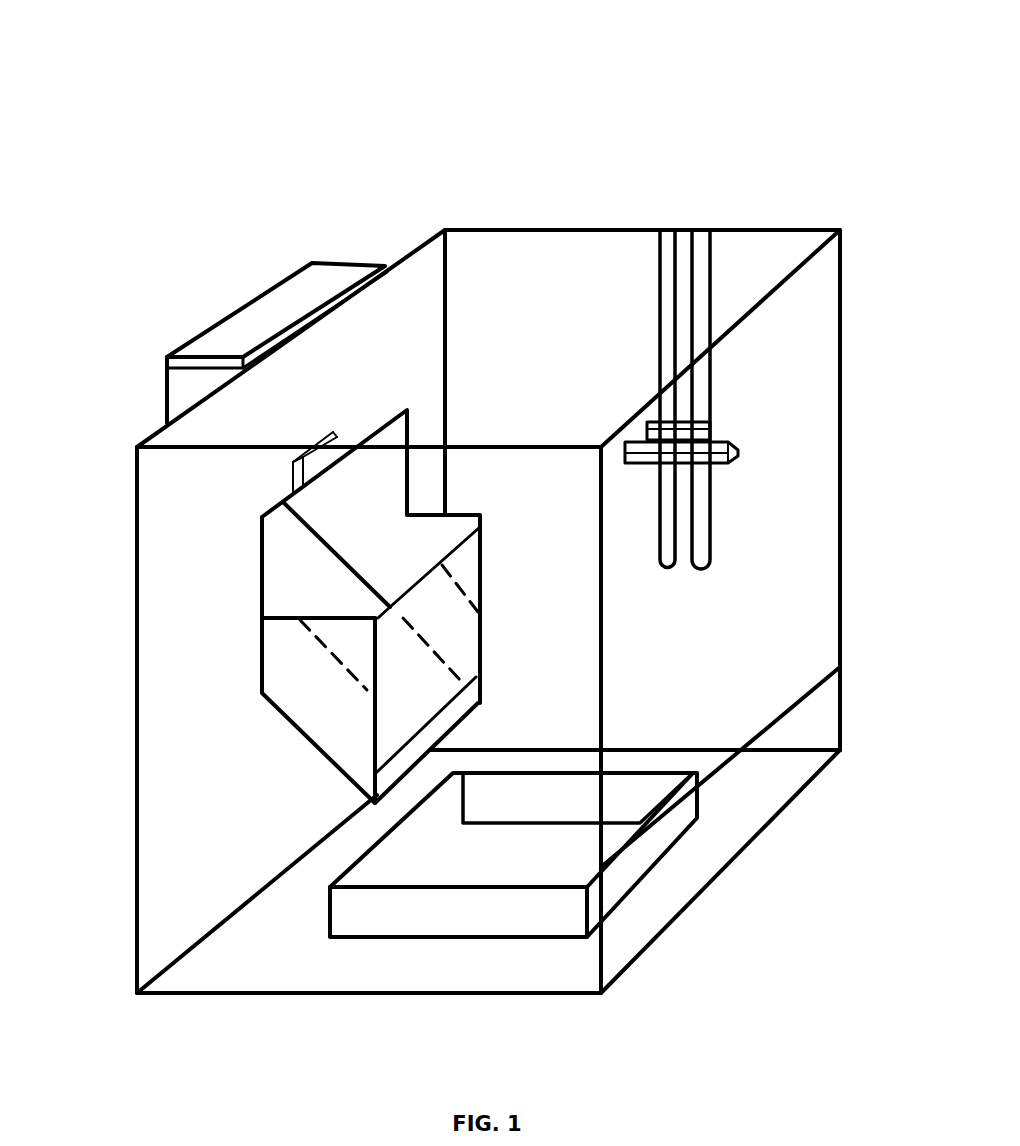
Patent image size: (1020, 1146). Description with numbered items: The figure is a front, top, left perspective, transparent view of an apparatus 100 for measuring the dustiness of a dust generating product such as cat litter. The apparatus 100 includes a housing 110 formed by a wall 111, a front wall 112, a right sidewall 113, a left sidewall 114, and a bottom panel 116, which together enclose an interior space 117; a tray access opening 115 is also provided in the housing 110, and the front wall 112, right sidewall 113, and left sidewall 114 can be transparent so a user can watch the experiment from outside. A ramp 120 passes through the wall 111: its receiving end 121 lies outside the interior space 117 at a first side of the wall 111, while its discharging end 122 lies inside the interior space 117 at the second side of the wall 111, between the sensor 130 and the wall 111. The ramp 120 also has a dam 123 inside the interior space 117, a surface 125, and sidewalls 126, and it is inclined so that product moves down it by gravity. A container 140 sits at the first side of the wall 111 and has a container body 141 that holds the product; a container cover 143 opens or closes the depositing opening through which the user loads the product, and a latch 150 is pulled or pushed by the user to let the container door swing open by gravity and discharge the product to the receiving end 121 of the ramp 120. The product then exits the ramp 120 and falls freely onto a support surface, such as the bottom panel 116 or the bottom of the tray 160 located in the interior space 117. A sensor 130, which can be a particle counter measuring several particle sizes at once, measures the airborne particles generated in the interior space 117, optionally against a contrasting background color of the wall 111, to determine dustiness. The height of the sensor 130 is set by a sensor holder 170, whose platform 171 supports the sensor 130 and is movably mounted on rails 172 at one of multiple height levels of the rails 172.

The apparatus 100 is at (467, 30).
The housing 110 is at (552, 201).
The wall 111 is at (275, 403).
The front wall 112 is at (812, 330).
The right sidewall 113 is at (494, 252).
The left sidewall 114 is at (160, 867).
The tray access opening 115 is at (797, 823).
The bottom panel 116 is at (653, 950).
The interior space 117 is at (494, 305).
The ramp 120 is at (227, 553).
The receiving end 121 is at (288, 770).
The discharging end 122 is at (310, 798).
The dam 123 is at (470, 572).
The surface 125 is at (323, 607).
The sidewalls 126 is at (349, 551).
The sensor 130 is at (710, 425).
The container 140 is at (212, 270).
The container body 141 is at (180, 395).
The container cover 143 is at (256, 323).
The latch 150 is at (332, 437).
The tray 160 is at (504, 868).
The sensor holder 170 is at (683, 210).
The platform 171 is at (738, 456).
The rails 172 is at (714, 553).